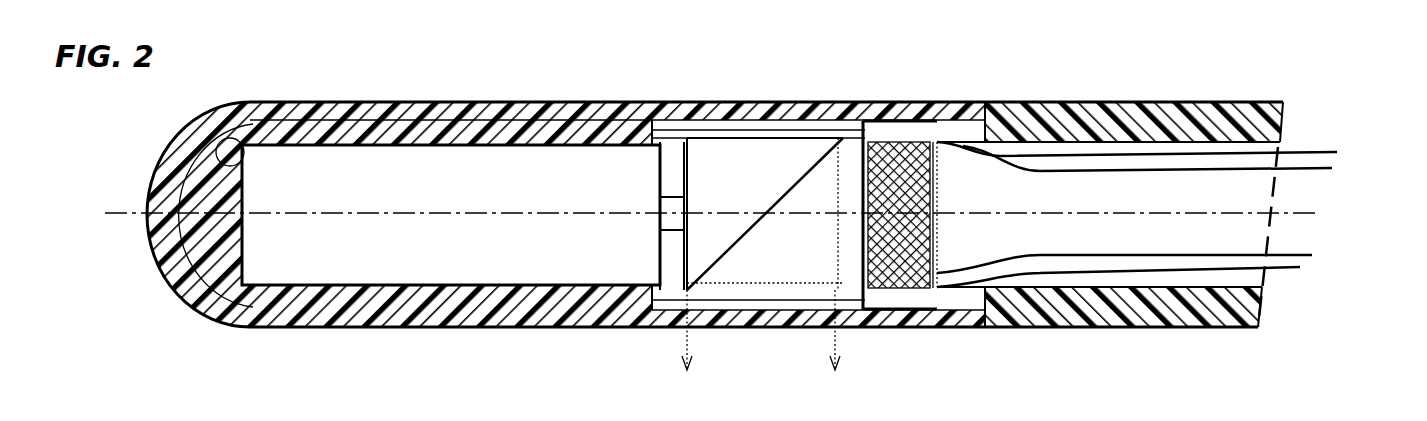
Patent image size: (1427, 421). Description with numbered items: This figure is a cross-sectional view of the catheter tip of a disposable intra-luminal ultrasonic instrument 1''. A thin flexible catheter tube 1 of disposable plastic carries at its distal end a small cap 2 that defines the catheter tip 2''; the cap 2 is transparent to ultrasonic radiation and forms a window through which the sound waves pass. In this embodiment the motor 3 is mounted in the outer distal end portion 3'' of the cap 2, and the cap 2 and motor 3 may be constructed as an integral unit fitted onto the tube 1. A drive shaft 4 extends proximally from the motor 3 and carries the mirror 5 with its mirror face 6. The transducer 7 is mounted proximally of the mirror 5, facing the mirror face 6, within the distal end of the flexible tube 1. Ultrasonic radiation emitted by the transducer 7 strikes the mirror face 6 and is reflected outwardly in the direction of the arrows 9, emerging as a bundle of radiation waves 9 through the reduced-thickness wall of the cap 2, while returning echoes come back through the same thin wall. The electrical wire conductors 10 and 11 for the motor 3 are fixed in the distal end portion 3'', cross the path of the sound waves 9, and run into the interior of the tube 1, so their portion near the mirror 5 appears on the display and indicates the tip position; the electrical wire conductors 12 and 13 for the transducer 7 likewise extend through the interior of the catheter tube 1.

The flexible tube 1 is at (1110, 192).
The disposable intra-luminal ultrasonic instrument 1'' is at (1134, 58).
The cap 2 is at (766, 189).
The catheter tip 2'' is at (400, 187).
The motor 3 is at (451, 215).
The outer distal end portion 3'' is at (121, 287).
The drive shaft 4 is at (675, 196).
The mirror 5 is at (748, 184).
The mirror face 6 is at (763, 221).
The transducer 7 is at (900, 122).
The bundle of radiation waves 9 is at (683, 333).
The electrical wire conductor 10 is at (1306, 156).
The electrical wire conductor 11 is at (1330, 170).
The electrical wire conductor 12 is at (1290, 253).
The electrical wire conductor 13 is at (1270, 268).